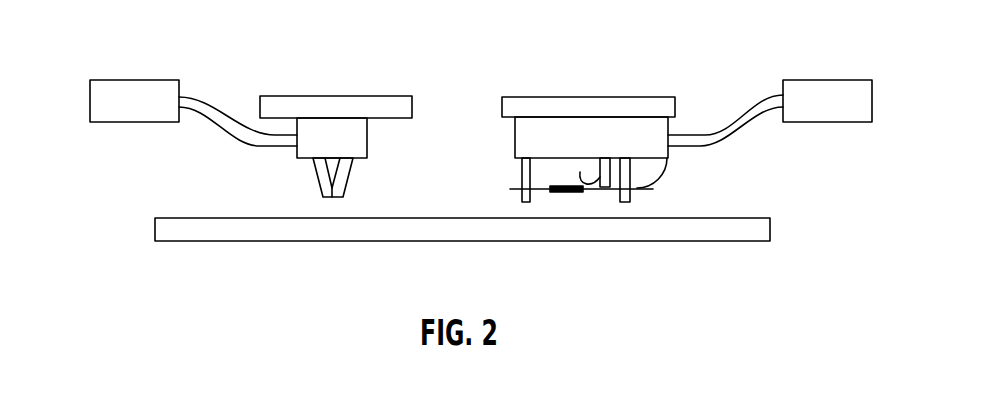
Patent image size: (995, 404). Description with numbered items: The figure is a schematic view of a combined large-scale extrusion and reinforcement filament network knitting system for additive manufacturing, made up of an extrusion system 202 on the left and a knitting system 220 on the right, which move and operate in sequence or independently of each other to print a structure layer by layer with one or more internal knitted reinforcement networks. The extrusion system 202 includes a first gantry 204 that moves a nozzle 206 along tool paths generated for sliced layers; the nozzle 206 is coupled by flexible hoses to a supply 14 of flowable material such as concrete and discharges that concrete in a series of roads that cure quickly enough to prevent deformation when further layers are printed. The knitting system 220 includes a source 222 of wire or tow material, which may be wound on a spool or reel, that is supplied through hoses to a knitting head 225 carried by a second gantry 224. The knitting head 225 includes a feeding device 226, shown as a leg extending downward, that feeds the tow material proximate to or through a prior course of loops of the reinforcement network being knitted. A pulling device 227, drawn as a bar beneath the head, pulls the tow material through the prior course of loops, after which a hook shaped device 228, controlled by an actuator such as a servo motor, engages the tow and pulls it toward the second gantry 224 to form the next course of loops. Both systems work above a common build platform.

The supply of flowable material 14 is at (88, 100).
The extrusion system 202 is at (326, 84).
The first gantry 204 is at (268, 96).
The nozzle 206 is at (367, 133).
The knitting system 220 is at (651, 76).
The source of wire or tow material 222 is at (810, 80).
The second gantry 224 is at (523, 97).
The knitting head 225 is at (645, 125).
The feeding device 226 is at (633, 180).
The pulling device 227 is at (560, 197).
The hook shaped device 228 is at (597, 193).